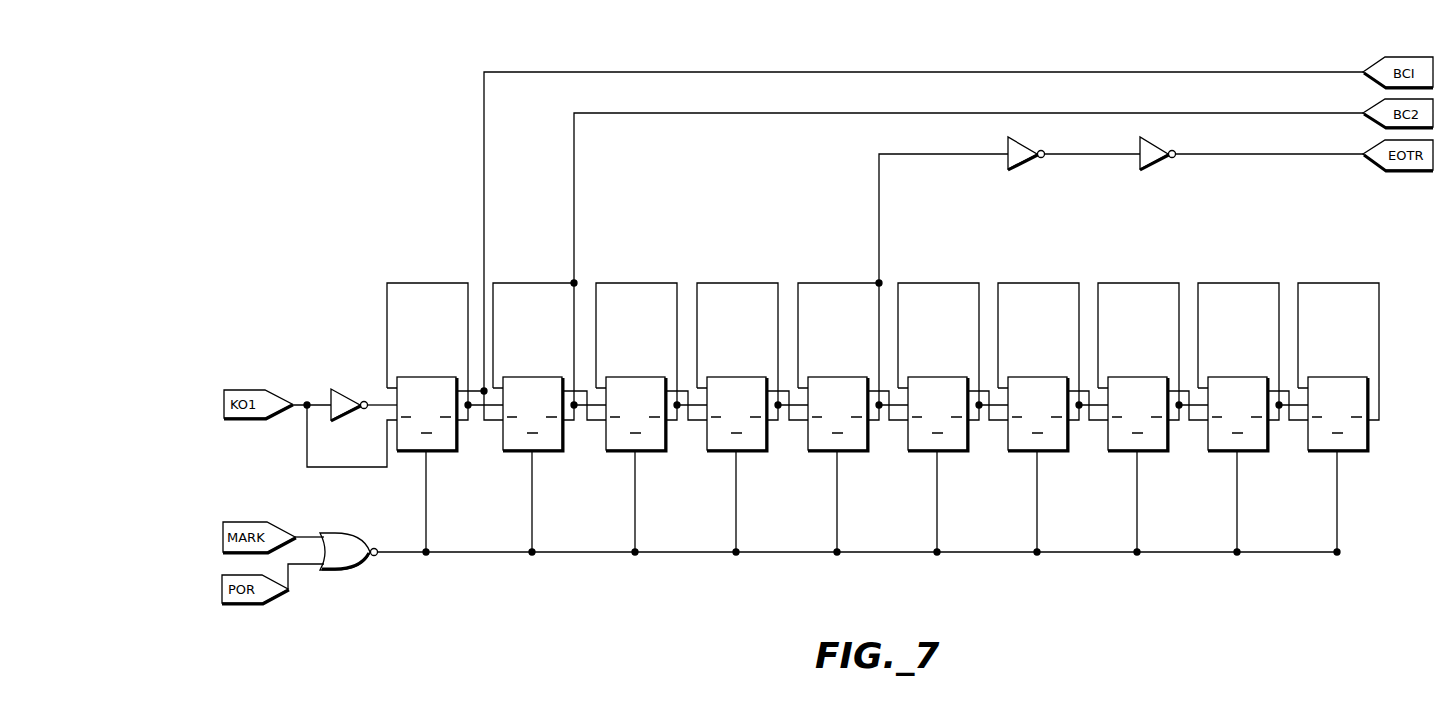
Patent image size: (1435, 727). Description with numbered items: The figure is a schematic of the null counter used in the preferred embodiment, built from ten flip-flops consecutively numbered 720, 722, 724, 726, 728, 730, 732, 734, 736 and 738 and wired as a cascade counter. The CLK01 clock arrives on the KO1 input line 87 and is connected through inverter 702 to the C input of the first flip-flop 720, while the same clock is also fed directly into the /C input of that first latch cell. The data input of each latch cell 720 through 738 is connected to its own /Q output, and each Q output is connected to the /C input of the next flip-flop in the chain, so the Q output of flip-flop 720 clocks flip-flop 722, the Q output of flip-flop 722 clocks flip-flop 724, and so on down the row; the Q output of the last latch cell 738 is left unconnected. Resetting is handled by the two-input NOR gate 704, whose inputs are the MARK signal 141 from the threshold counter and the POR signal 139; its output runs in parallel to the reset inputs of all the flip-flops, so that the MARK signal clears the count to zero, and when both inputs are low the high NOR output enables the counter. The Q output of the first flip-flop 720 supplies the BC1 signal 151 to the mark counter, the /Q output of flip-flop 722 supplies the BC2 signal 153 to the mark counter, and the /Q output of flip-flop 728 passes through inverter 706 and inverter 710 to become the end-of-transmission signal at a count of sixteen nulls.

The KO1 input line 87 is at (301, 411).
The inverter 702 is at (346, 364).
The MARK signal 141 is at (299, 534).
The POR signal 139 is at (293, 567).
The NOR gate 704 is at (365, 564).
The inverter 706 is at (1029, 125).
The inverter 710 is at (1163, 125).
The BC1 signal 151 is at (1309, 72).
The BC2 output line 153 is at (1293, 113).
The flip-flop 720 is at (411, 377).
The flip-flop 722 is at (517, 377).
The flip-flop 724 is at (620, 377).
The flip-flop 726 is at (721, 377).
The flip-flop 728 is at (822, 377).
The flip-flop 730 is at (922, 377).
The flip-flop 732 is at (1022, 377).
The flip-flop 734 is at (1122, 377).
The flip-flop 736 is at (1222, 377).
The flip-flop 738 is at (1322, 377).